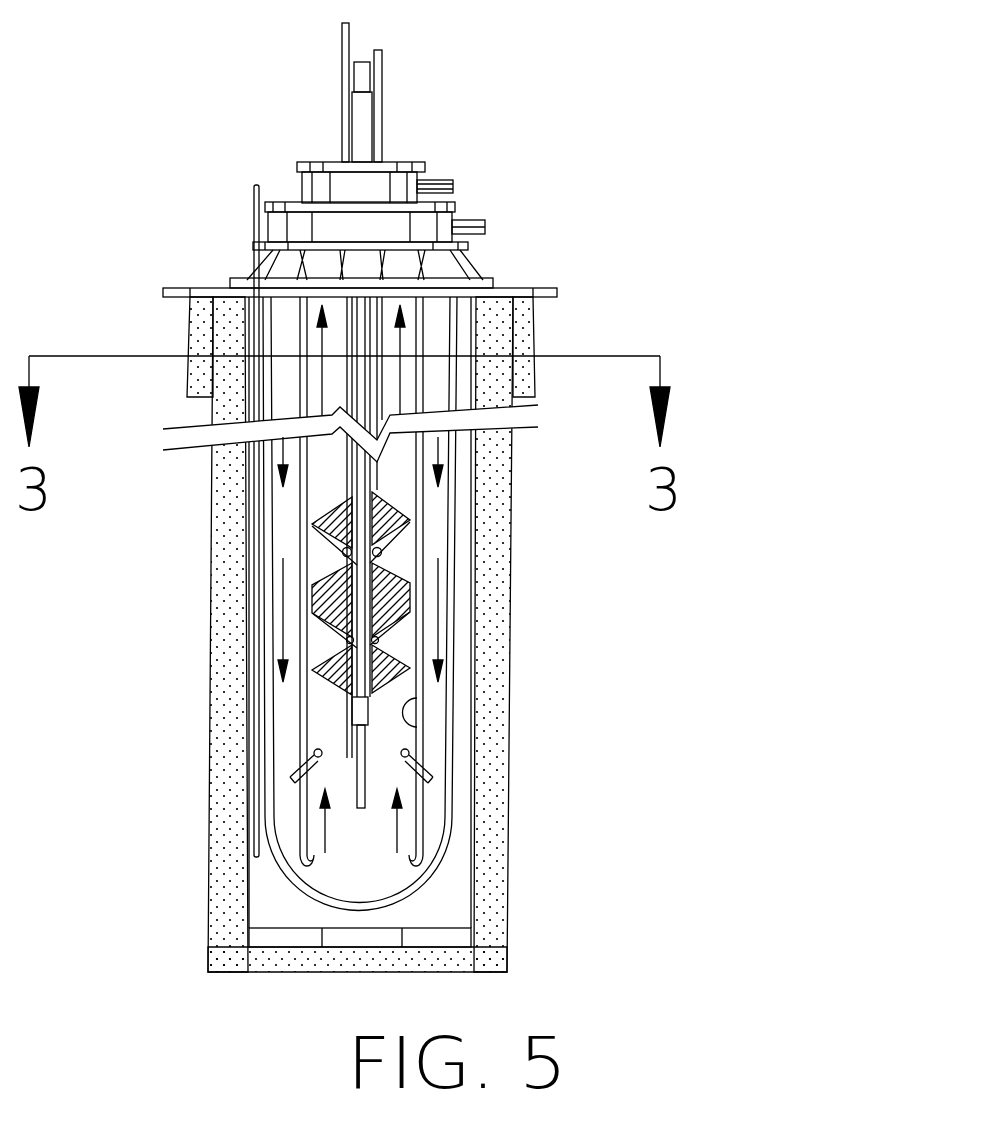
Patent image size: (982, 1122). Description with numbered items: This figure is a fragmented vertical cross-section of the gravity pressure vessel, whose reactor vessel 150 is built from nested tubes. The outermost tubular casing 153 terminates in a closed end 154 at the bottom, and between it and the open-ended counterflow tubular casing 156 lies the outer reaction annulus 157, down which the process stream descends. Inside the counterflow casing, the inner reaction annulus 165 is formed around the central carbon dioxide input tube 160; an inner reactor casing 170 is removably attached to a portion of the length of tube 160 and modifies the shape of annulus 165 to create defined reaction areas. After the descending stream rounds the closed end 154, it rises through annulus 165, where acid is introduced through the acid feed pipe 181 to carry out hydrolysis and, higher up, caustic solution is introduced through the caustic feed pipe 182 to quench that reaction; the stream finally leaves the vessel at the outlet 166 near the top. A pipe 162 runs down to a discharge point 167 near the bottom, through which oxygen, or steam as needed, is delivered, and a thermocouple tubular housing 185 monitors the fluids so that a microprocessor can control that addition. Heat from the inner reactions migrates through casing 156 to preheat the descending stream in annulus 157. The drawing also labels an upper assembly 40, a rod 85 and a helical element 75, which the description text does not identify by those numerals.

The drive head assembly 40 is at (286, 182).
The shaft 85 is at (342, 40).
The acid feed pipe 181 is at (340, 110).
The carbon dioxide input tube 160 is at (352, 140).
The pipe 162 is at (380, 56).
The caustic feed pipe 182 is at (382, 122).
The outlet 166 is at (453, 185).
The inner reaction annulus 165 is at (400, 350).
The outer reaction annulus 157 is at (440, 453).
The helical screw 75 is at (350, 530).
The counterflow tubular casing 156 is at (422, 582).
The tubular casing 153 is at (268, 712).
The closed end 154 is at (291, 880).
The inner reactor casing 170 is at (337, 672).
The discharge point 167 is at (362, 808).
The thermocouple tubular housing 185 is at (347, 722).
The reactor vessel 150 is at (245, 950).